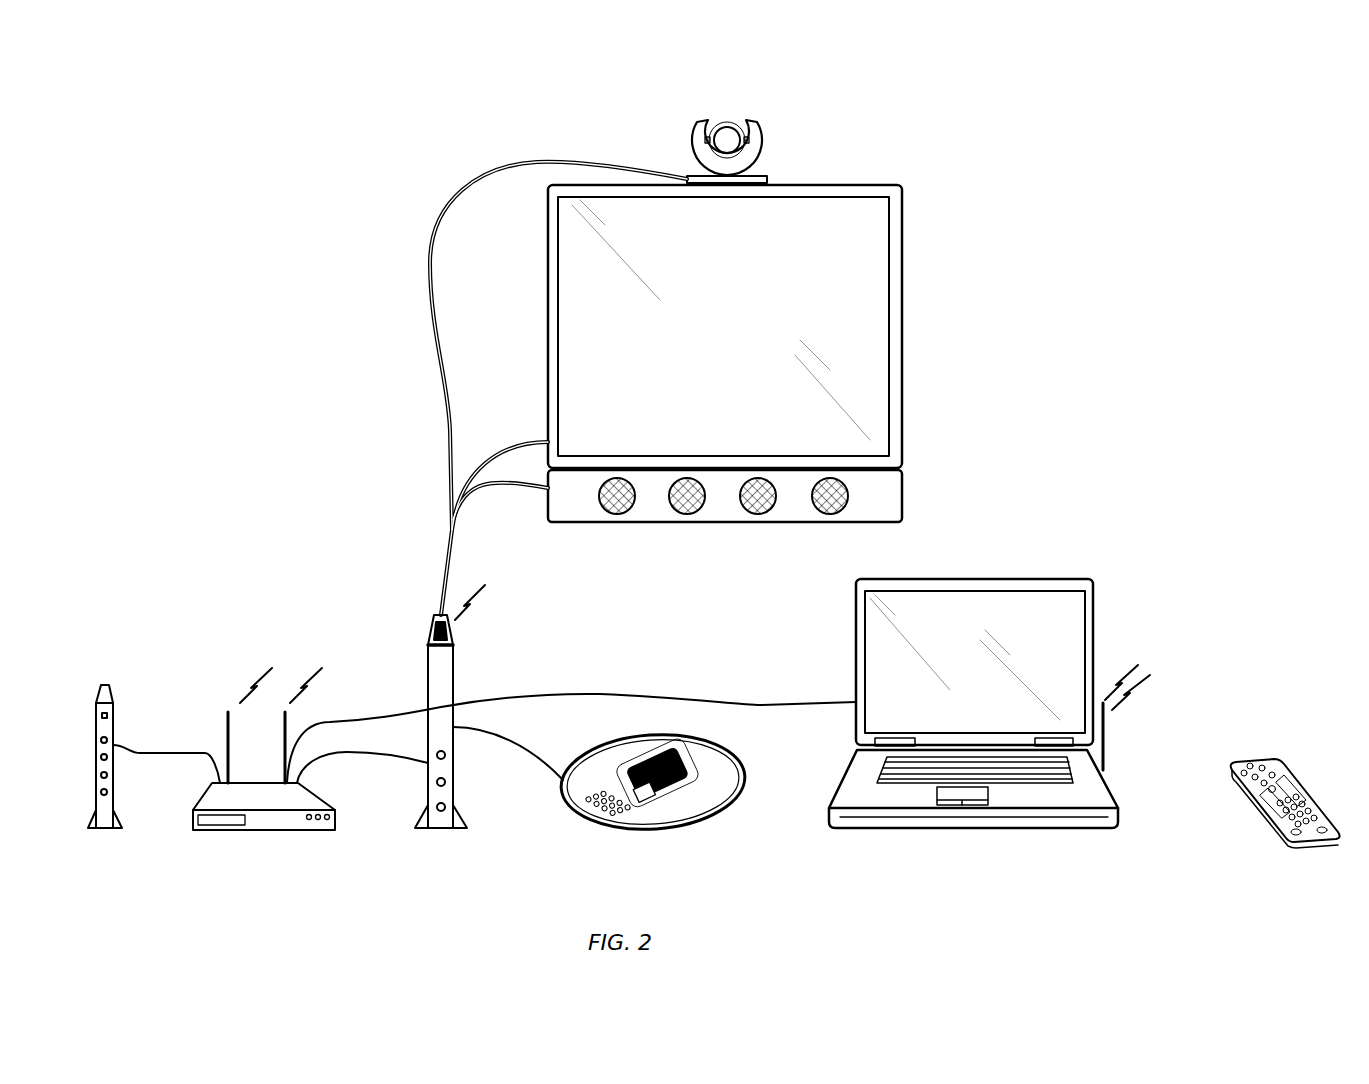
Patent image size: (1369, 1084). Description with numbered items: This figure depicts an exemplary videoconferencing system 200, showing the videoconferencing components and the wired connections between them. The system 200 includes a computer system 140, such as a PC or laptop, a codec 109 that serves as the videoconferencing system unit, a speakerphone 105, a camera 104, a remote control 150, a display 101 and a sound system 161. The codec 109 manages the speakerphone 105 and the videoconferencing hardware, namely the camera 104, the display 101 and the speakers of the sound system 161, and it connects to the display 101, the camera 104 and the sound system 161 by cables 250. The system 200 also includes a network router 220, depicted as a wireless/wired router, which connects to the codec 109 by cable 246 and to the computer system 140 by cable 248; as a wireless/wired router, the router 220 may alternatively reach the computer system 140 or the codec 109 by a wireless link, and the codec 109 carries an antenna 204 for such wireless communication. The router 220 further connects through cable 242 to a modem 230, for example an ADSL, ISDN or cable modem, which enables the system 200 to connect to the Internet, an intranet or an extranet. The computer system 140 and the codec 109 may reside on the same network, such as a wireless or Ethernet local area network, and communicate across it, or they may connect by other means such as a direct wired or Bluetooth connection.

The videoconferencing system 200 is at (1036, 218).
The display 101 is at (889, 327).
The camera 104 is at (727, 122).
The sound system 161 is at (902, 495).
The cables 250 is at (445, 375).
The modem 230 is at (106, 830).
The cable 242 is at (140, 752).
The network router 220 is at (275, 830).
The cable 248 is at (640, 697).
The cable 246 is at (402, 762).
The codec 109 is at (443, 830).
The speakerphone 105 is at (672, 832).
The computer system 140 is at (1035, 828).
The wireless antenna 204 is at (1107, 742).
The remote control 150 is at (1290, 782).